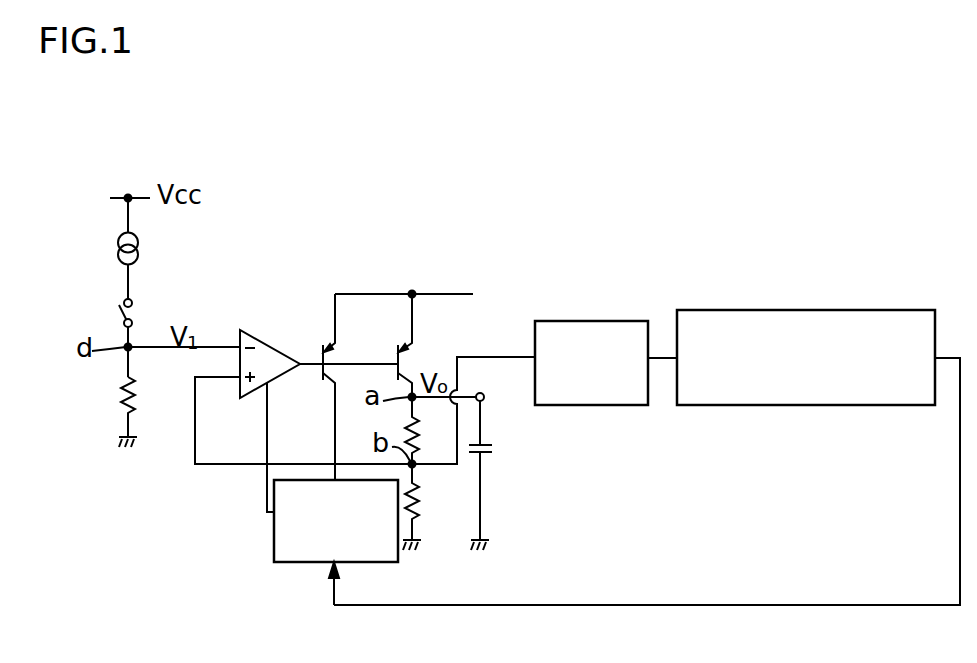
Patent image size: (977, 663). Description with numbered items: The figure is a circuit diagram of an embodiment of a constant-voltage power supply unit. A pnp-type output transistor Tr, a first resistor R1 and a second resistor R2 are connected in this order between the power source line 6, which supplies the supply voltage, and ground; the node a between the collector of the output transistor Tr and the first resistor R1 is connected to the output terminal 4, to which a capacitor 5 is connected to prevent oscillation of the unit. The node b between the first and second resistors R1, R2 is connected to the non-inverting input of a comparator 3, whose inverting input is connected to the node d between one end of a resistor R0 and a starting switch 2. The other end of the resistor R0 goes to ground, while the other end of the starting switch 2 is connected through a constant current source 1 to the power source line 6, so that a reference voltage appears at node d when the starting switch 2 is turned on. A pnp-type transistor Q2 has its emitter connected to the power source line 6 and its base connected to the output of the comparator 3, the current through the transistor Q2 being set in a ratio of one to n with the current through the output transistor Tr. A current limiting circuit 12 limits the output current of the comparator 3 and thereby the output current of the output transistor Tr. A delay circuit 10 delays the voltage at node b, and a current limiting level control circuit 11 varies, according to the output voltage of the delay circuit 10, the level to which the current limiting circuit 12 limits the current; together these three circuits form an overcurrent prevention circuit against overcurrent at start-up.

The constant current source 1 is at (140, 249).
The starting switch 2 is at (115, 311).
The comparator 3 is at (268, 336).
The output terminal 4 is at (486, 393).
The capacitor 5 is at (496, 450).
The power source line 6 is at (396, 293).
The delay circuit 10 is at (600, 321).
The current limiting level control circuit 11 is at (745, 318).
The current limiting circuit 12 is at (273, 530).
The pnp-type transistor Q2 is at (311, 387).
The pnp-type output transistor Tr is at (391, 345).
The resistor R0 is at (108, 407).
The first resistor R1 is at (428, 430).
The second resistor R2 is at (428, 502).